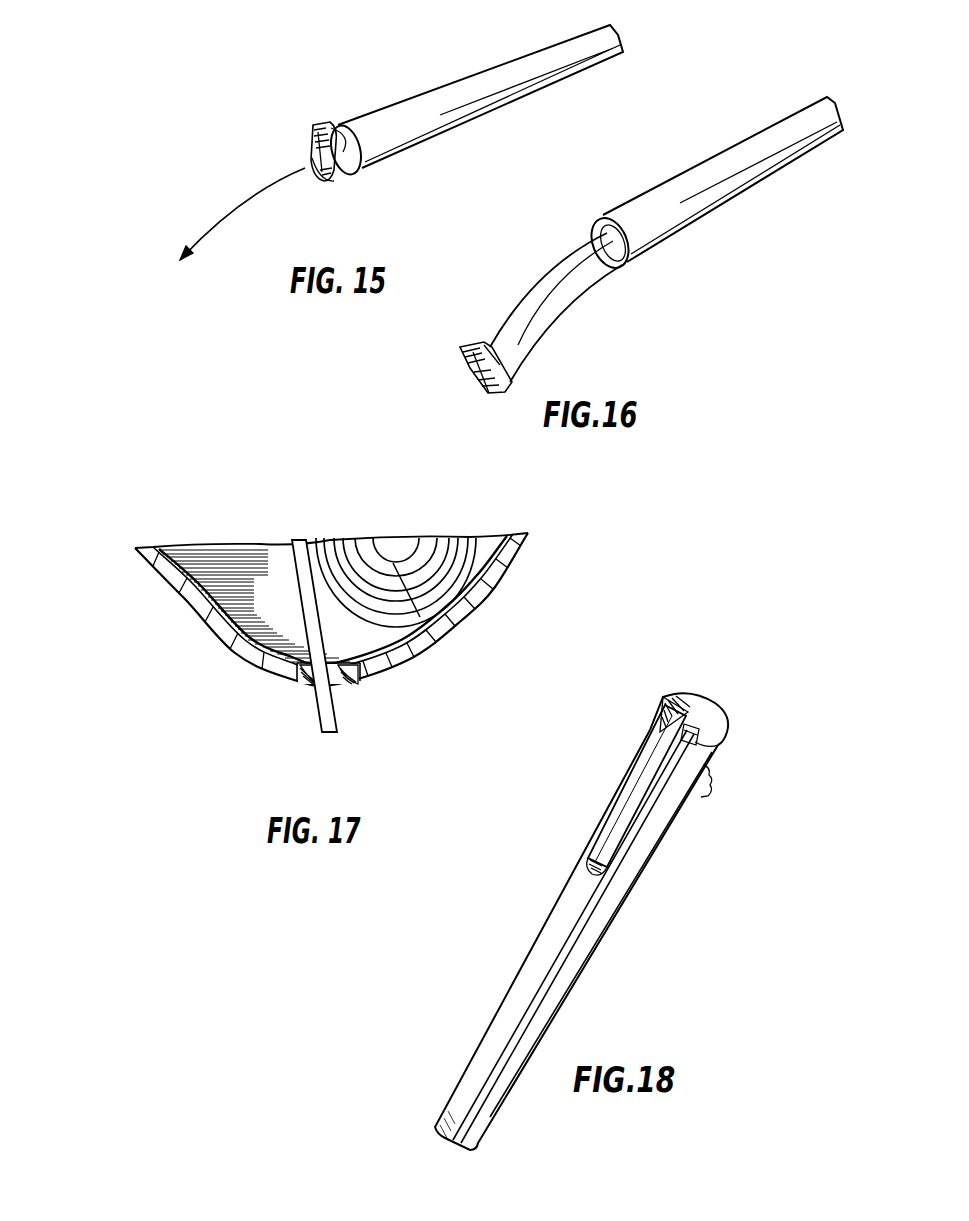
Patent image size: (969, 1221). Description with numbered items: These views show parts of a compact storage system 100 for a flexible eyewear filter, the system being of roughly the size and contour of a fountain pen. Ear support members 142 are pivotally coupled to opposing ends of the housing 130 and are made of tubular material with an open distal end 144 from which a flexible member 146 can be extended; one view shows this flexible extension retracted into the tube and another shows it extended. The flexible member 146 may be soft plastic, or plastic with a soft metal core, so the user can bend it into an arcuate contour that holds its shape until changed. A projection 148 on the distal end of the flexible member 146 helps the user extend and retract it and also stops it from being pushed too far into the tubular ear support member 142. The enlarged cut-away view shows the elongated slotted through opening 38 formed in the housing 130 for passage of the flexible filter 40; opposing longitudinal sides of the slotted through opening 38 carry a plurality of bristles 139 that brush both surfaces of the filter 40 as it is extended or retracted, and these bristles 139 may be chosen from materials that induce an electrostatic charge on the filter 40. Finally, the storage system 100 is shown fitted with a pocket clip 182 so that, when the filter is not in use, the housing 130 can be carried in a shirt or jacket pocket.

In FIG. 15, the ear support member 142 is at (523, 100).
In FIG. 16, the ear support member 142 is at (703, 221).
In FIG. 15, the open end of sheath 144 is at (362, 167).
In FIG. 16, the open end of sheath 144 is at (628, 267).
In FIG. 15, the flexible member 146 is at (340, 184).
In FIG. 16, the flexible member 146 is at (557, 320).
In FIG. 15, the projection 148 is at (318, 124).
In FIG. 16, the projection 148 is at (460, 355).
In FIG. 17, the housing 130 is at (493, 616).
In FIG. 18, the housing 130 is at (574, 936).
In FIG. 17, the bristles 139 is at (306, 685).
In FIG. 17, the slotted through opening 38 is at (357, 688).
In FIG. 17, the flexible filter 40 is at (322, 718).
In FIG. 18, the pocket clip 182 is at (644, 742).
In FIG. 18, the storage system 100 is at (682, 843).